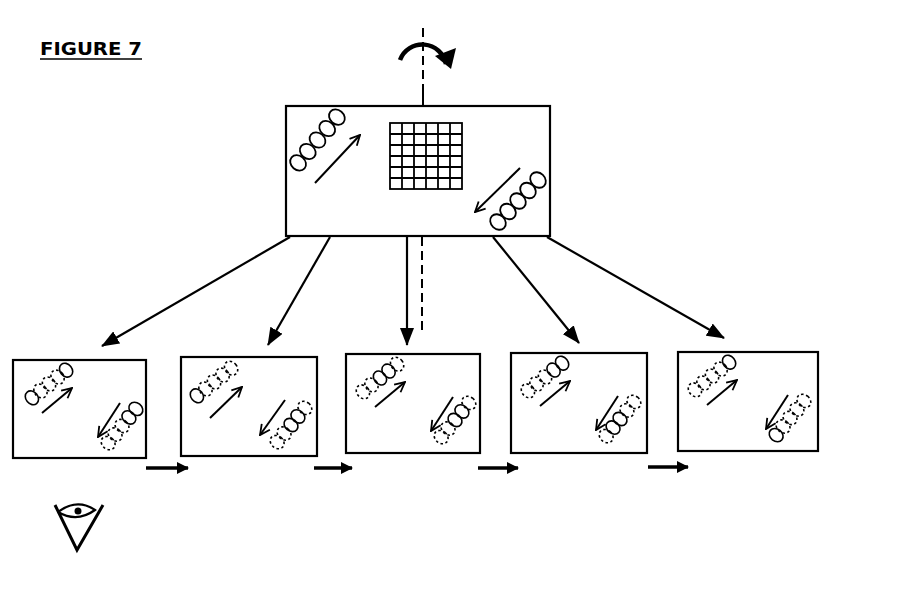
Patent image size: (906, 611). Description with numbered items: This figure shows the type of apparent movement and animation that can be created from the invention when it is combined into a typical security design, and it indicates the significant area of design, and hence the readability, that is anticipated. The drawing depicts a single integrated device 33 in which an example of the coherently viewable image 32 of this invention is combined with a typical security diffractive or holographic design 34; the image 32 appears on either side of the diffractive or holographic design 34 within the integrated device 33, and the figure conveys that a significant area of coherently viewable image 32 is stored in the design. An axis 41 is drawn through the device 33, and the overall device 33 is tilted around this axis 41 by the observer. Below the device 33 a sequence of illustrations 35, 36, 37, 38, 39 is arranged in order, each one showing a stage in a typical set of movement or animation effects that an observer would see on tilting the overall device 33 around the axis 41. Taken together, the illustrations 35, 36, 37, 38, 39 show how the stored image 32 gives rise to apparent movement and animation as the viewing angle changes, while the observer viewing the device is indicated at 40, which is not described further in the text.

The coherently viewable image 32 is at (307, 128).
The single integrated device 33 is at (435, 167).
The security diffractive or holographic design 34 is at (459, 120).
The movement or animation effect illustration 35 is at (79, 419).
The movement or animation effect illustration 36 is at (249, 418).
The movement or animation effect illustration 37 is at (413, 416).
The movement or animation effect illustration 38 is at (579, 416).
The movement or animation effect illustration 39 is at (748, 415).
The observer eye 40 is at (89, 527).
The axis 41 is at (443, 179).